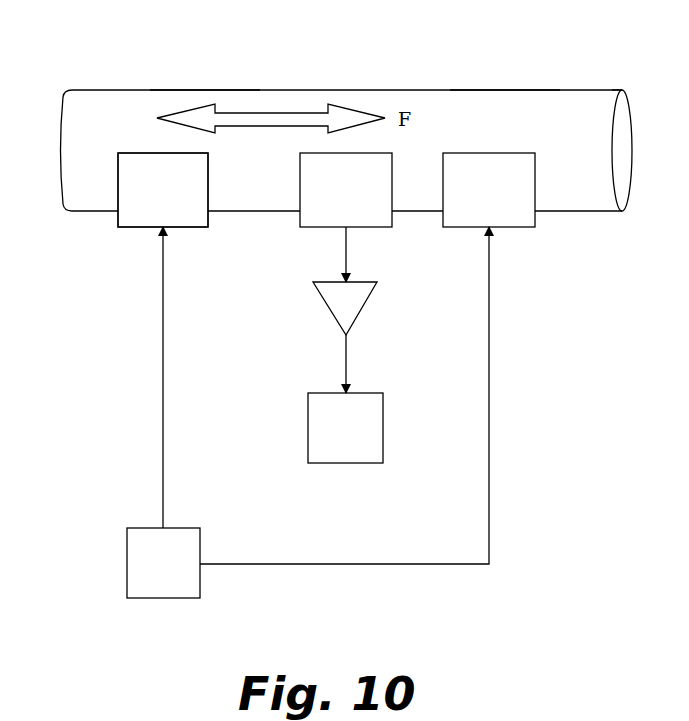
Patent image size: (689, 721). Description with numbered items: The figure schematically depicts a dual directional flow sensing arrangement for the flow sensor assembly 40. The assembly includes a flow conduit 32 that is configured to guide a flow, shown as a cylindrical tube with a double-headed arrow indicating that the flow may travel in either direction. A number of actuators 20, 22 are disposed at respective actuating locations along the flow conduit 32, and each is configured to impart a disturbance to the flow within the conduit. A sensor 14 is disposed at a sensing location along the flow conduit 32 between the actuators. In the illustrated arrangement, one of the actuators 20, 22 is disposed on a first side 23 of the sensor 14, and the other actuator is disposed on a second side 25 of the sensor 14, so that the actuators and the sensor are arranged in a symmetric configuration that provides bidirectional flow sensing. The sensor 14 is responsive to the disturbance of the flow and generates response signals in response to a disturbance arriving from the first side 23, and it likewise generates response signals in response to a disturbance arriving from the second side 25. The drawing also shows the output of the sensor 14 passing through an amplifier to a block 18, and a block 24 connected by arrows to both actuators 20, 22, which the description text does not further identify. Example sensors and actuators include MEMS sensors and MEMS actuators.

The flow sensor assembly 40 is at (66, 73).
The actuator 22 is at (148, 153).
The actuator 20 is at (138, 228).
The first side 23 is at (208, 86).
The second side 25 is at (503, 86).
The flow conduit 32 is at (608, 90).
The sensor 14 is at (308, 227).
The output / processing unit 18 is at (333, 437).
The controller 24 is at (150, 574).